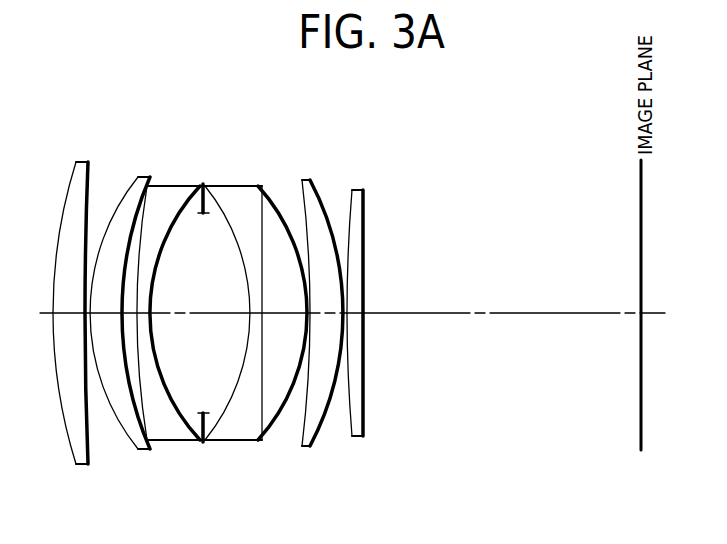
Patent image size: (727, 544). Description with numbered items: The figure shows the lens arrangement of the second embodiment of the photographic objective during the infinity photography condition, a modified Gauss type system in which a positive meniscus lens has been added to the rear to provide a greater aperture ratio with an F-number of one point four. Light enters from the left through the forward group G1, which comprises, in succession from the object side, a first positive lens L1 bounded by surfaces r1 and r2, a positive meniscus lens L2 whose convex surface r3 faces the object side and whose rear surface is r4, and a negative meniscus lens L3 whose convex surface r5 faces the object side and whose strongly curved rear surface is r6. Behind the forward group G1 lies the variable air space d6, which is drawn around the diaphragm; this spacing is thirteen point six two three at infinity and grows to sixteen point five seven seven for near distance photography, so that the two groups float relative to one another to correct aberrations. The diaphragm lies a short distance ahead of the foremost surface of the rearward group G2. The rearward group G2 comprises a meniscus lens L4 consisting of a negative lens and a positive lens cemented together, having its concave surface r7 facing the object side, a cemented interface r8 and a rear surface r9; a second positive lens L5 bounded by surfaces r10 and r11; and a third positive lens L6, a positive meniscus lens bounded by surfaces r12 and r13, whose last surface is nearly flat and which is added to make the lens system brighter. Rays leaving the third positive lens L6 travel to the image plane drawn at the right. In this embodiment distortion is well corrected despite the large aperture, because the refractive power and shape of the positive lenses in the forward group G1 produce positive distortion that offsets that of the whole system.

The forward group G1 is at (193, 121).
The rearward group G2 is at (375, 121).
The first positive lens L1 is at (90, 163).
The positive meniscus lens L2 is at (143, 177).
The negative meniscus lens L3 is at (184, 185).
The meniscus lens L4 is at (268, 162).
The second positive lens L5 is at (305, 180).
The third positive lens L6 is at (360, 190).
The variable air space d6 is at (193, 313).
The first lens surface r1 is at (73, 463).
The second lens surface r2 is at (89, 463).
The third lens surface r3 is at (134, 449).
The fourth lens surface r4 is at (146, 449).
The fifth lens surface r5 is at (150, 441).
The sixth lens surface r6 is at (195, 441).
The seventh lens surface r7 is at (212, 441).
The eighth lens surface r8 is at (258, 441).
The ninth lens surface r9 is at (271, 441).
The tenth lens surface r10 is at (298, 447).
The eleventh lens surface r11 is at (312, 447).
The twelfth lens surface r12 is at (350, 437).
The thirteenth lens surface r13 is at (366, 437).